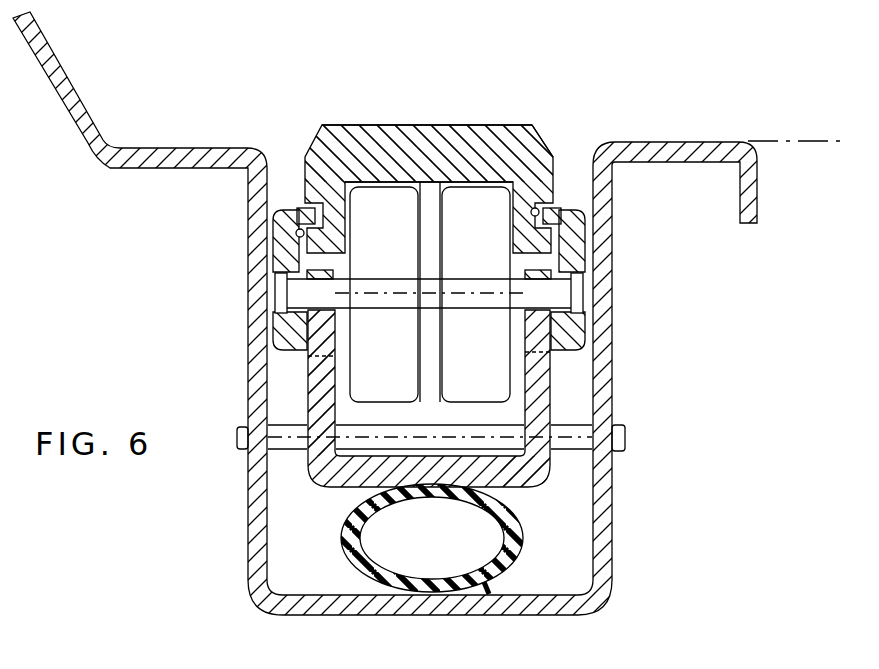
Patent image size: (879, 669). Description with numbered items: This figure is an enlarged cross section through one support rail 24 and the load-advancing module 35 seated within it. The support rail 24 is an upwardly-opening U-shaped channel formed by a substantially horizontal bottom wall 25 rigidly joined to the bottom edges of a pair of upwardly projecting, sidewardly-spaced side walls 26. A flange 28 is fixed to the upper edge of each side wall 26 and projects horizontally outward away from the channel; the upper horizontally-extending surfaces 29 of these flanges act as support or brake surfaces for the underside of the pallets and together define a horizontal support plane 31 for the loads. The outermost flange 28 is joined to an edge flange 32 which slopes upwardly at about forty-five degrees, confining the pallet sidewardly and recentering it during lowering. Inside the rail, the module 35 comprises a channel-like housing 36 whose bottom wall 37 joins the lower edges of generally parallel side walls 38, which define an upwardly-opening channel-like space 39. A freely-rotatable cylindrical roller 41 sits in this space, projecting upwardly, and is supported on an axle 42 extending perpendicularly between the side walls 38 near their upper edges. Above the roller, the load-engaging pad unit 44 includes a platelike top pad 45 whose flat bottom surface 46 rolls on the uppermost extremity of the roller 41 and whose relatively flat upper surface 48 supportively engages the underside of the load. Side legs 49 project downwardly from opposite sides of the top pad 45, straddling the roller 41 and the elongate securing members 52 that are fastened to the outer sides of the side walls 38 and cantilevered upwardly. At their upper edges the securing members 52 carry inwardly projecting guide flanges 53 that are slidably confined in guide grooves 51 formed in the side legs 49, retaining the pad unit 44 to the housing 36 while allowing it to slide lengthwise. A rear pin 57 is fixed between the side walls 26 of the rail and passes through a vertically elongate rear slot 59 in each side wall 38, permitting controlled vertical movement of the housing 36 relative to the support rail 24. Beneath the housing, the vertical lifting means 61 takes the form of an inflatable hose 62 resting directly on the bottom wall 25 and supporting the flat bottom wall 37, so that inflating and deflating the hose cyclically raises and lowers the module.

The support rail 24 is at (618, 581).
The bottom wall 25 is at (567, 608).
The side walls 26 is at (250, 292).
The flange 28 is at (677, 163).
The upper horizontally-extending surface 29 is at (633, 142).
The horizontal support plane 31 is at (828, 140).
The edge flange 32 is at (57, 56).
The load-advancing module 35 is at (558, 128).
The channel-like housing 36 is at (305, 478).
The bottom wall 37 is at (527, 482).
The side walls 38 is at (307, 363).
The channel-like space 39 is at (350, 407).
The cylindrical roller 41 is at (368, 197).
The axle 42 is at (472, 300).
The load-engaging pad unit 44 is at (418, 122).
The load-engaging top pad 45 is at (447, 140).
The bottom surface 46 is at (398, 188).
The upper surface 48 is at (523, 123).
The side legs 49 is at (352, 227).
The guide groove 51 is at (297, 233).
The securing member 52 is at (283, 245).
The guide flange 53 is at (300, 210).
The rear pin 57 is at (593, 458).
The rear slot 59 is at (335, 362).
The vertical lifting means 61 is at (483, 600).
The inflatable hose 62 is at (347, 547).